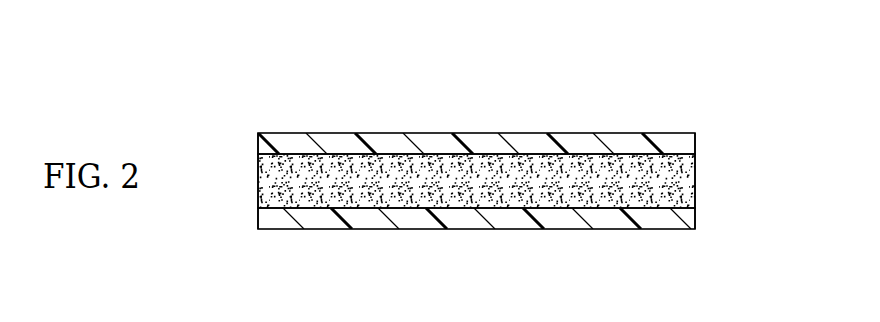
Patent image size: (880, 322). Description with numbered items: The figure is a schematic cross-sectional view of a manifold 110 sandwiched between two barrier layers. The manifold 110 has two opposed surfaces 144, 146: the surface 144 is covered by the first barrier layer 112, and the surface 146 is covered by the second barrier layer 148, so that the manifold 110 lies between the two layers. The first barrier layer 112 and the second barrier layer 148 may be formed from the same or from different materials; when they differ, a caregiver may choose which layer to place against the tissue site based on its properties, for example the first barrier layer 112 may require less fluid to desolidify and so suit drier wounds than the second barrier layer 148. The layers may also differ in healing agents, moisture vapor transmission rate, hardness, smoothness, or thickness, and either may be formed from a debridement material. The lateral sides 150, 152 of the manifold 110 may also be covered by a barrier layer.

The manifold 110 is at (271, 183).
The first barrier layer 112 is at (563, 215).
The surface of the manifold 144 is at (375, 208).
The surface of the manifold 146 is at (575, 152).
The second barrier layer 148 is at (477, 143).
The lateral side of the manifold 150 is at (258, 174).
The lateral side of the manifold 152 is at (696, 178).